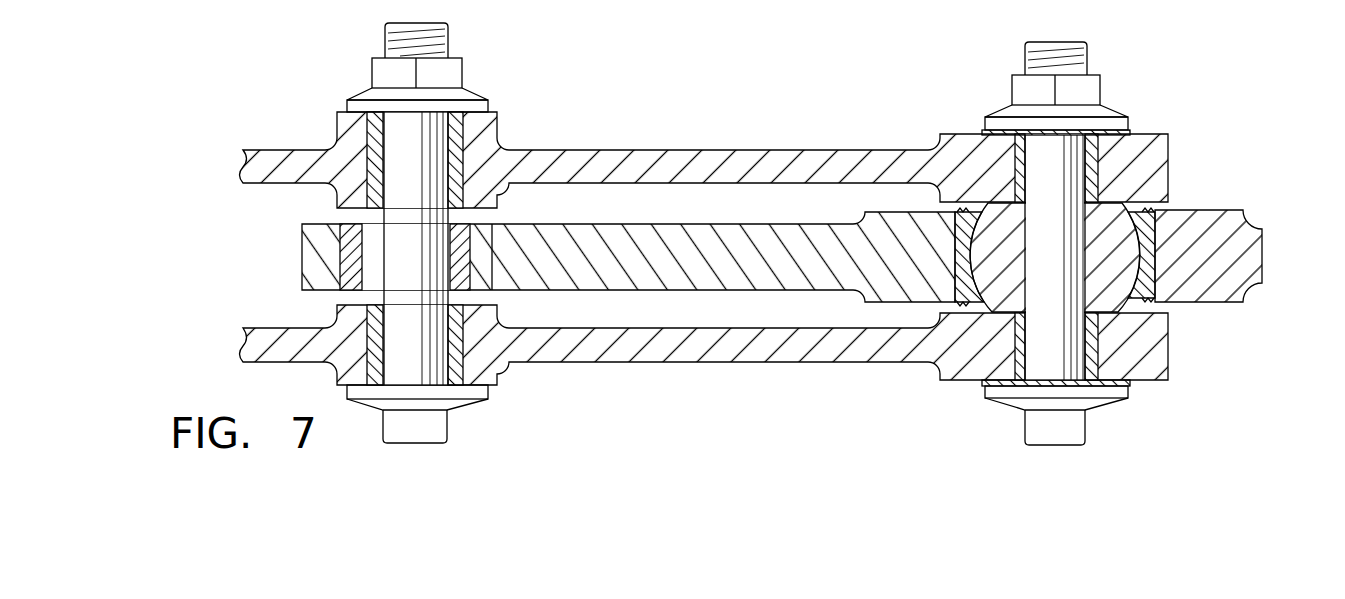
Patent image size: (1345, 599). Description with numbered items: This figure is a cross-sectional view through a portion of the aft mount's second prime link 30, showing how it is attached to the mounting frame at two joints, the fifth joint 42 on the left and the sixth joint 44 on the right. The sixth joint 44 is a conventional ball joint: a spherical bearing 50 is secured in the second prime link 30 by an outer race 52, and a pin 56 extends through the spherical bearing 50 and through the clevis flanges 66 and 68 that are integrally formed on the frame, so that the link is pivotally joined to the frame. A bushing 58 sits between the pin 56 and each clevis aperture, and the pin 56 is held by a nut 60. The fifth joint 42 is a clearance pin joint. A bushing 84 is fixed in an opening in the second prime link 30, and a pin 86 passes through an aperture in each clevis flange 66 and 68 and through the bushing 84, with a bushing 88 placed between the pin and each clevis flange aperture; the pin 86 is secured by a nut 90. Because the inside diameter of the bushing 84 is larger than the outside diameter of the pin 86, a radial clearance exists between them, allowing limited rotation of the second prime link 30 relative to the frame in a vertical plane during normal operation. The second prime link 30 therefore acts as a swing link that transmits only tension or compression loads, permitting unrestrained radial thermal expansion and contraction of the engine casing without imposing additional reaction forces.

The second prime link 30 is at (1252, 235).
The fifth joint 42 is at (415, 233).
The sixth joint 44 is at (1084, 242).
The spherical bearing 50 is at (1112, 282).
The outer race 52 is at (1148, 230).
The pin 56 is at (1062, 263).
The bushing 58 is at (1093, 147).
The nut 60 is at (1007, 112).
The clevis flange 66 is at (713, 153).
The clevis flange 68 is at (722, 357).
The bushing 84 is at (348, 260).
The pin 86 is at (425, 272).
The bushing 88 is at (466, 132).
The nut 90 is at (367, 98).